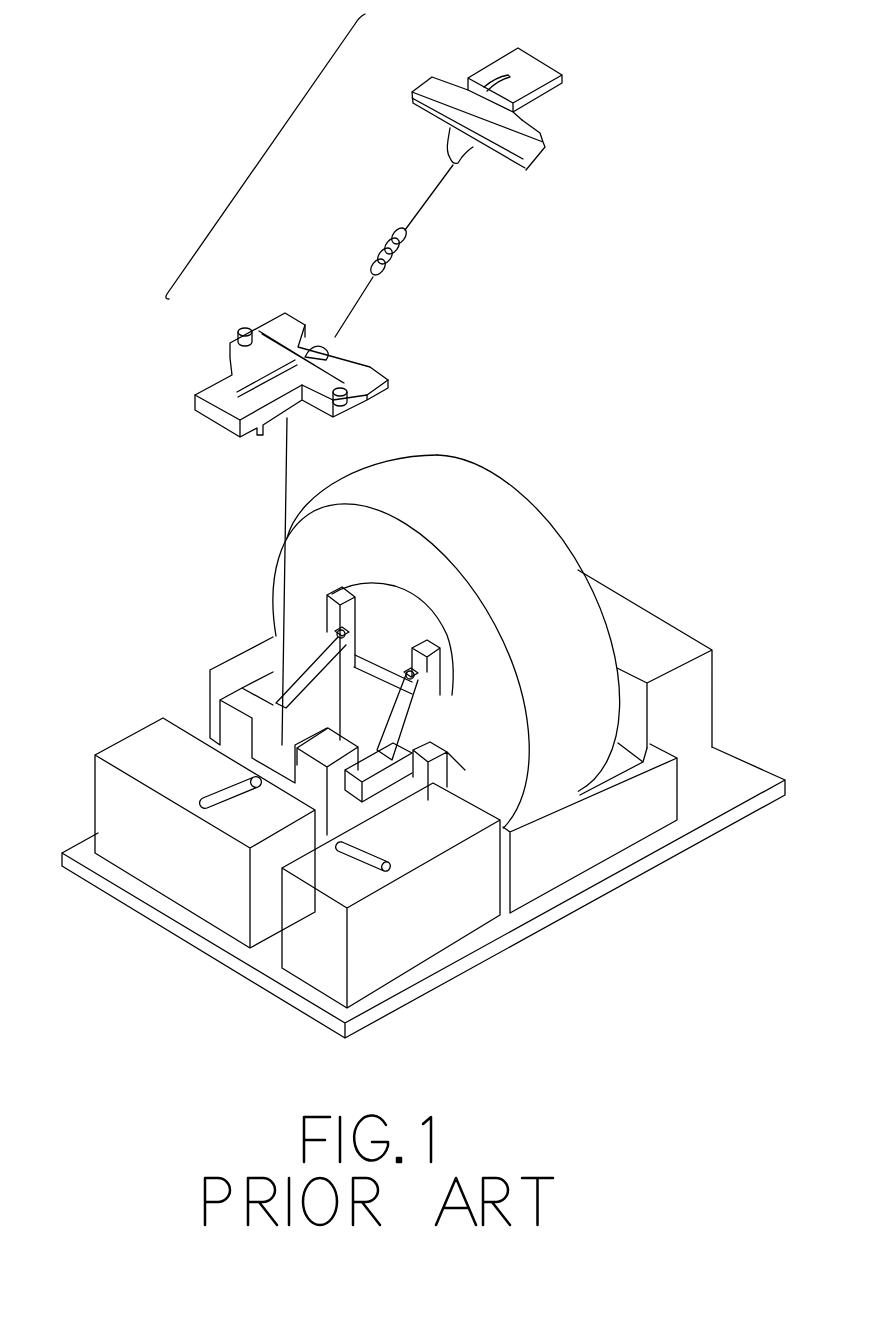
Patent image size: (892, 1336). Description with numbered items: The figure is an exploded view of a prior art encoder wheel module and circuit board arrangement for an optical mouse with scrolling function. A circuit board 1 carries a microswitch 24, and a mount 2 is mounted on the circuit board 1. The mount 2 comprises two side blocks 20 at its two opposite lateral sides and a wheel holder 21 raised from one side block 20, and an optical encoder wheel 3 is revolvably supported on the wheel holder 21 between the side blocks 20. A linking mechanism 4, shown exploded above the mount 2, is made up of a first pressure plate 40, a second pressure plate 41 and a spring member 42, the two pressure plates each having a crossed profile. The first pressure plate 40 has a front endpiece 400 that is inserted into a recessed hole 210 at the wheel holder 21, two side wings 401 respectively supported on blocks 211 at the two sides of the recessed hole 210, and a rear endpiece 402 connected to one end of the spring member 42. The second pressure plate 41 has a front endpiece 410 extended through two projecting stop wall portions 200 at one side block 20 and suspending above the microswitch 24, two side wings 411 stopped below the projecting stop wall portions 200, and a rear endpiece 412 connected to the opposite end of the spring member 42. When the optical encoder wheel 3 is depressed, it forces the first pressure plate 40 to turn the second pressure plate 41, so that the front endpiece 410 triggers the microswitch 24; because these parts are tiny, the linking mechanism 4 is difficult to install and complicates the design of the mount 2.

The circuit board 1 is at (727, 798).
The mount 2 is at (625, 835).
The optical encoder wheel 3 is at (463, 493).
The linking mechanism 4 is at (259, 154).
The first pressure plate 40 is at (476, 134).
The front endpiece 400 is at (522, 60).
The side wings 401 is at (432, 88).
The rear endpiece 402 is at (455, 168).
The second pressure plate 41 is at (276, 379).
The front endpiece 410 is at (215, 403).
The side wings 411 is at (232, 350).
The rear endpiece 412 is at (333, 350).
The spring member 42 is at (376, 236).
The side blocks 20 is at (230, 727).
The projecting stop wall portions 200 is at (268, 698).
The wheel holder 21 is at (350, 700).
The recessed hole 210 is at (383, 657).
The blocks 211 is at (340, 631).
The microswitch 24 is at (215, 783).